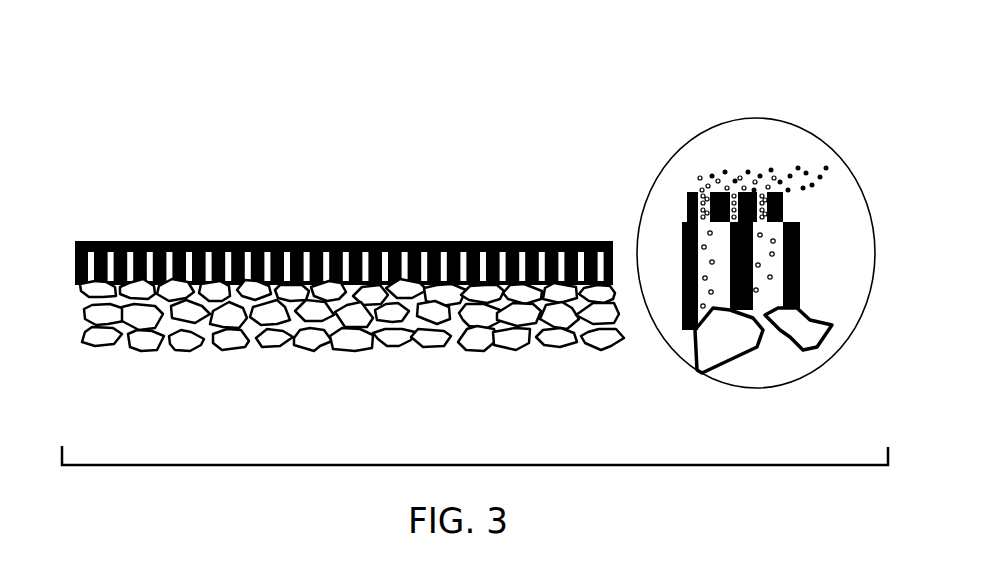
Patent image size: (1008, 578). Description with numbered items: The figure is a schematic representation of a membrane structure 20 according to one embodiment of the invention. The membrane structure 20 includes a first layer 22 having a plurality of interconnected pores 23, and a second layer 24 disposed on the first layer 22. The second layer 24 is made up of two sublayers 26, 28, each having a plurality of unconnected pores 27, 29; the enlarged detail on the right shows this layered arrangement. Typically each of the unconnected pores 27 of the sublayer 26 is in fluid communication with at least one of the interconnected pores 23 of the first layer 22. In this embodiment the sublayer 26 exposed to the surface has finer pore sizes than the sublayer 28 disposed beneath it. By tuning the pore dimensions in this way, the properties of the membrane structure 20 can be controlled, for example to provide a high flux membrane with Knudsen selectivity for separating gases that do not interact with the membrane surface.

The membrane structure 20 is at (218, 60).
The first layer 22 is at (67, 292).
The interconnected pores 23 is at (381, 330).
The second layer 24 is at (67, 242).
The sublayer 26 is at (787, 207).
The unconnected pores 27 is at (733, 177).
The sublayer 28 is at (800, 255).
The unconnected pores 29 is at (718, 270).